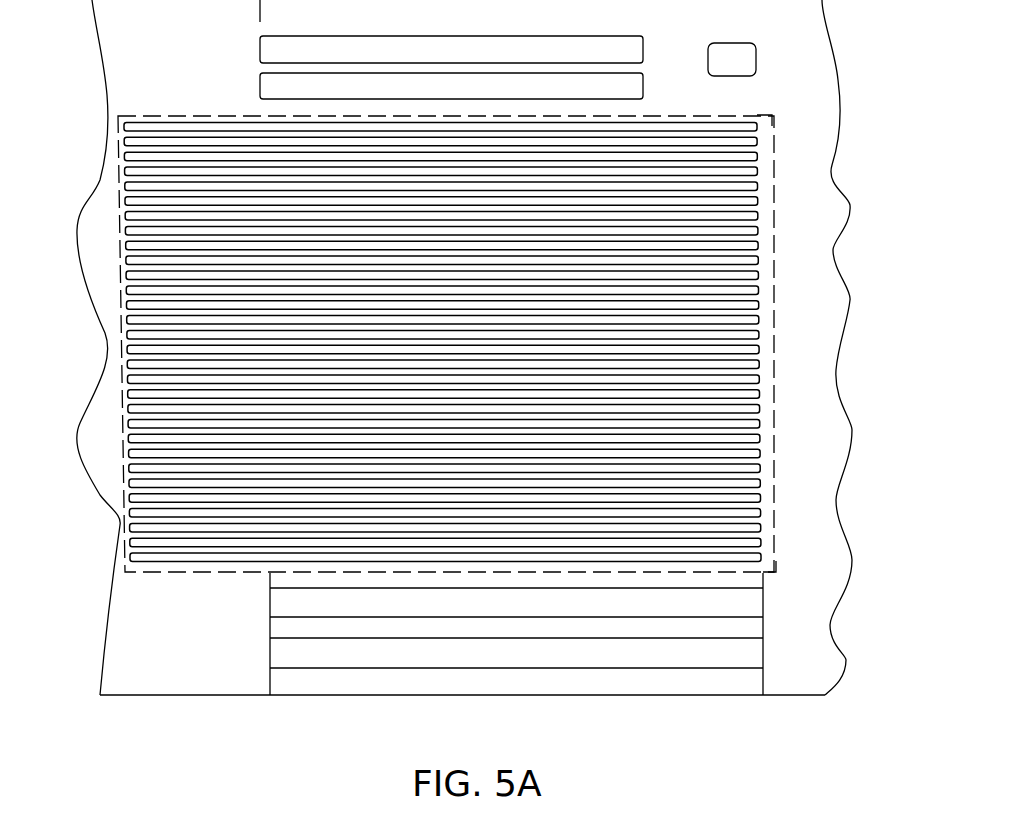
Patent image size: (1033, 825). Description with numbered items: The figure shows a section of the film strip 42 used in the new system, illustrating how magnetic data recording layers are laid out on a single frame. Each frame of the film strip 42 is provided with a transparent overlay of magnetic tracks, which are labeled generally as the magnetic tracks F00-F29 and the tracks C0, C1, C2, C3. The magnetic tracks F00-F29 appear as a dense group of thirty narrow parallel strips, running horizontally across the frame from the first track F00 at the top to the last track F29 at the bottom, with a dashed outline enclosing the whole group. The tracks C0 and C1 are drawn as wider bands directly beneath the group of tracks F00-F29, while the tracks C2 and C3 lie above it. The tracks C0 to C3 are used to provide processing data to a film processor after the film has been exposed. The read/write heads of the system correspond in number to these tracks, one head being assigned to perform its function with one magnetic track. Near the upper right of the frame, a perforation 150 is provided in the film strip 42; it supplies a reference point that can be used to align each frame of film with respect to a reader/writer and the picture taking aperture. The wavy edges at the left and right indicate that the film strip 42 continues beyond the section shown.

The film strip 42 is at (104, 97).
The perforation 150 is at (734, 43).
The magnetic track F00 is at (760, 120).
The magnetic track F29 is at (766, 557).
The magnetic tracks F00-F29 is at (940, 123).
The magnetic track C0 is at (516, 634).
The magnetic track C1 is at (516, 653).
The magnetic track C2 is at (451, 87).
The magnetic track C3 is at (451, 51).